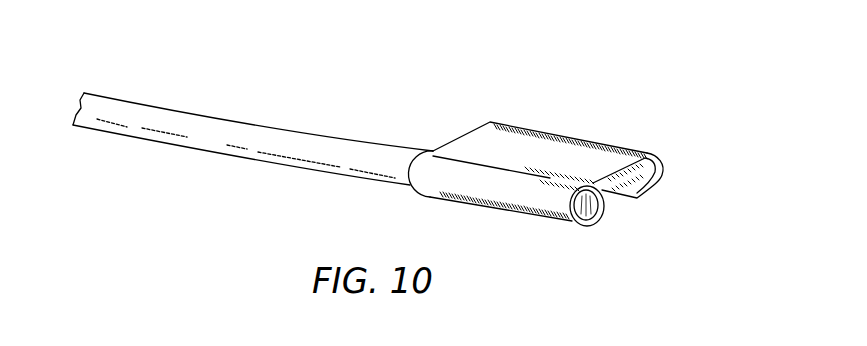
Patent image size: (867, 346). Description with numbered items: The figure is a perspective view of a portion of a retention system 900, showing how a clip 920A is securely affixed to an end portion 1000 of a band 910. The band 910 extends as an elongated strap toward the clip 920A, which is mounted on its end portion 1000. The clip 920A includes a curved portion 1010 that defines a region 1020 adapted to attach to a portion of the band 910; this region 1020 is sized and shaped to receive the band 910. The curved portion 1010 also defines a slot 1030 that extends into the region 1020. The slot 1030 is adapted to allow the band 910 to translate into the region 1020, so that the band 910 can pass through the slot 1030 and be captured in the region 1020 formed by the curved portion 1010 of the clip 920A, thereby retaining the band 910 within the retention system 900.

The retention system 900 is at (253, 135).
The band 910 is at (205, 130).
The clip 920A is at (443, 190).
The end portion 1000 is at (521, 151).
The curved portion 1010 is at (643, 152).
The region 1020 is at (663, 177).
The slot 1030 is at (614, 204).